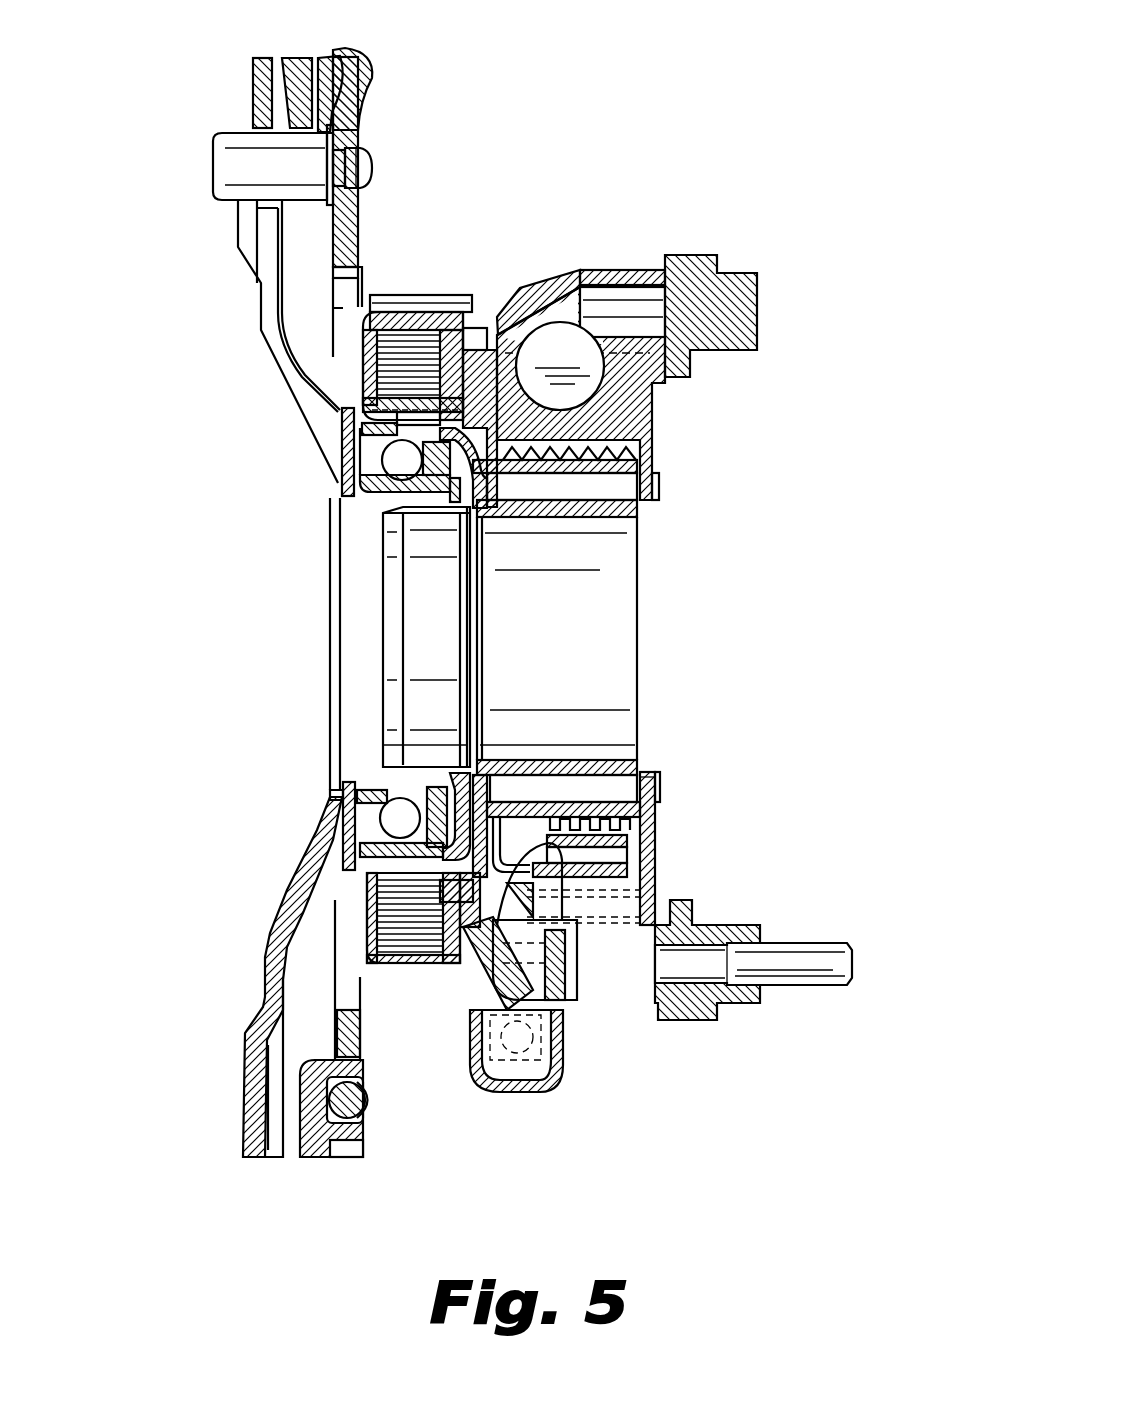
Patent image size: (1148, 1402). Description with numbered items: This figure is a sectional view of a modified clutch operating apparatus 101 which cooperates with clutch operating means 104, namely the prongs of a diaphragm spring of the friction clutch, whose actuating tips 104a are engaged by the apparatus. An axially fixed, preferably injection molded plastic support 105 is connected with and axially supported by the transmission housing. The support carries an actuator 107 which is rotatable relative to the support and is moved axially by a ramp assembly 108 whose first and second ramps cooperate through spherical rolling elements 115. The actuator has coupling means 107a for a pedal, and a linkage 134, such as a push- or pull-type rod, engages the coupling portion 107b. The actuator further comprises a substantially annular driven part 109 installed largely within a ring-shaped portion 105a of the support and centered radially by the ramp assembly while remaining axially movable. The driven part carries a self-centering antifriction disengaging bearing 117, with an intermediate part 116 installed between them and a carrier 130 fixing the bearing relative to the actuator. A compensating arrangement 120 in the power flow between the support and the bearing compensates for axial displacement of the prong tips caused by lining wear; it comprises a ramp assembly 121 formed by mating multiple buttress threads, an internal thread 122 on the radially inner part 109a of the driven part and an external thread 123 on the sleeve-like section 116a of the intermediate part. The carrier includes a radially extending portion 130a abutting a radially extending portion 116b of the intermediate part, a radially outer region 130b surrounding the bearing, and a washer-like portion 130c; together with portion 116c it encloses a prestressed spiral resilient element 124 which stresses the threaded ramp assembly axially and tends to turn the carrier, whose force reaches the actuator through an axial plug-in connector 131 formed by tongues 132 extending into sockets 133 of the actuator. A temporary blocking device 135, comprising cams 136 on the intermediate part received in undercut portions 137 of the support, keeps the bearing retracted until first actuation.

The apparatus 101 is at (742, 255).
The clutch operating means 104 is at (272, 305).
The clutch actuating portions 104a is at (330, 444).
The support 105 is at (632, 272).
The ring-shaped portion 105a is at (597, 825).
The actuator 107 is at (535, 880).
The coupling means 107a is at (483, 980).
The coupling portion 107b is at (520, 1043).
The ramp assembly 108 is at (567, 352).
The annular driven part 109 is at (600, 435).
The radially inner part 109a is at (503, 440).
The rolling elements 115 is at (580, 387).
The intermediate part 116 is at (657, 807).
The sleeve-like section 116a is at (657, 840).
The radially extending portion 116b is at (482, 760).
The portion of intermediate part 116c is at (405, 912).
The disengaging bearing 117 is at (395, 800).
The compensating arrangement 120 is at (330, 440).
The ramp assembly 121 is at (531, 487).
The internal thread 122 is at (540, 470).
The external thread 123 is at (635, 500).
The resilient element 124 is at (365, 950).
The carrier 130 is at (345, 830).
The radially extending portion 130a is at (460, 785).
The radially outer portion 130b is at (350, 800).
The washer-like portion 130c is at (372, 890).
The axial plug-in connector 131 is at (400, 290).
The tongues 132 is at (418, 303).
The sockets 133 is at (447, 297).
The linkage 134 is at (505, 1095).
The temporary blocking device 135 is at (672, 488).
The cams 136 is at (658, 772).
The undercut portions 137 is at (658, 783).